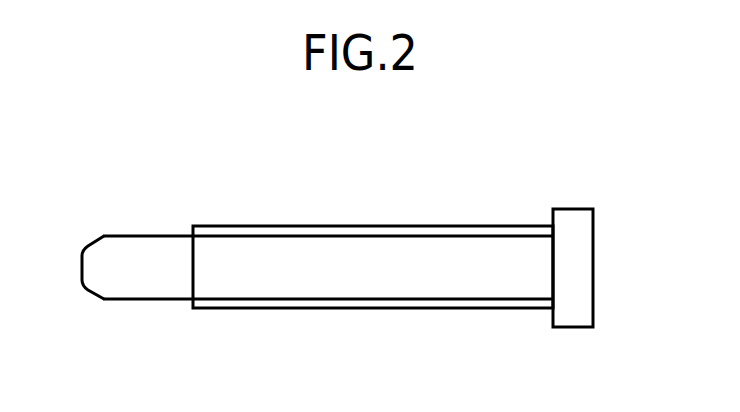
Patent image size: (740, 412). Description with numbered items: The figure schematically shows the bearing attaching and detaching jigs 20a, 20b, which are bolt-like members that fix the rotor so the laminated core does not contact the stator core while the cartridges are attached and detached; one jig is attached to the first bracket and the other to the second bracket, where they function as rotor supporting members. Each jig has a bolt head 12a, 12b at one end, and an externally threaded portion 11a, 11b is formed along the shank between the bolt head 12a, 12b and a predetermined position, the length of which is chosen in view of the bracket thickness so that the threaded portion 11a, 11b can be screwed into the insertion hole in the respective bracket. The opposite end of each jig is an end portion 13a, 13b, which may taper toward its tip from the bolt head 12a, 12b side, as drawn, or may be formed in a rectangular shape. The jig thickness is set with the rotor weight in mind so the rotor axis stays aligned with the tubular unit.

The externally threaded portion 11a is at (328, 300).
The externally threaded portion 11b is at (393, 309).
The bolt head 12a is at (604, 242).
The bolt head 12b is at (578, 208).
The end portion 13a is at (124, 292).
The end portion 13b is at (90, 292).
The bearing attaching and detaching jig 20a is at (373, 221).
The bearing attaching and detaching jig 20b is at (356, 199).